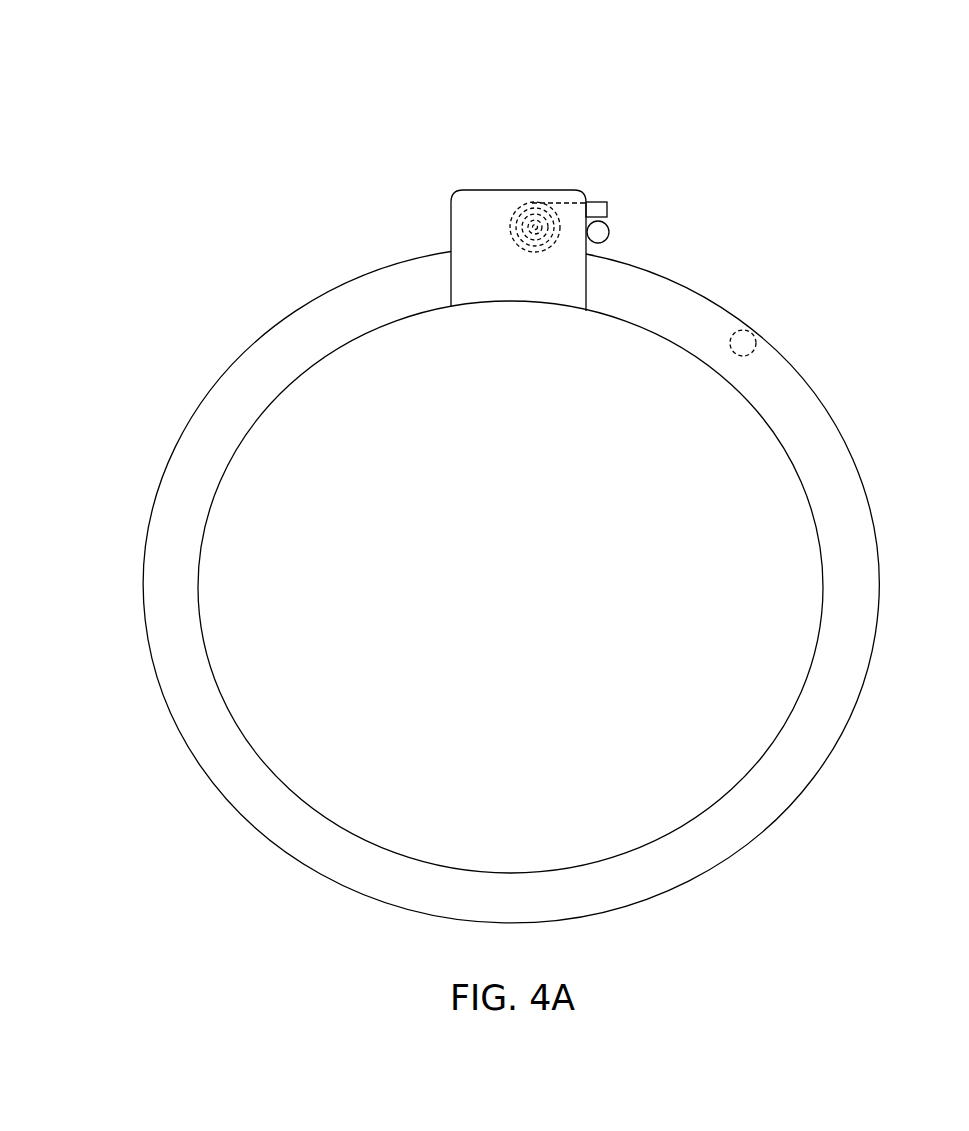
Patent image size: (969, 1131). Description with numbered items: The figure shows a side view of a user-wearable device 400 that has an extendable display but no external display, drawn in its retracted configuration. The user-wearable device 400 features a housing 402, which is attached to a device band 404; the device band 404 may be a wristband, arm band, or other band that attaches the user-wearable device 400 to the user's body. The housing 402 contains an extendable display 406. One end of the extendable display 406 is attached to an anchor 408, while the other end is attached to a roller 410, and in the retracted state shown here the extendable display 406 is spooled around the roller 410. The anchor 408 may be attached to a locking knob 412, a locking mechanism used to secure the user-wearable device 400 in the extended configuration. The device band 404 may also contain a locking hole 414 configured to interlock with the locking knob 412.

The user-wearable device 400 is at (170, 66).
The housing 402 is at (467, 207).
The device band 404 is at (322, 322).
The extendable display 406 is at (565, 207).
The anchor 408 is at (603, 215).
The roller 410 is at (535, 228).
The locking knob 412 is at (600, 232).
The locking hole 414 is at (747, 338).